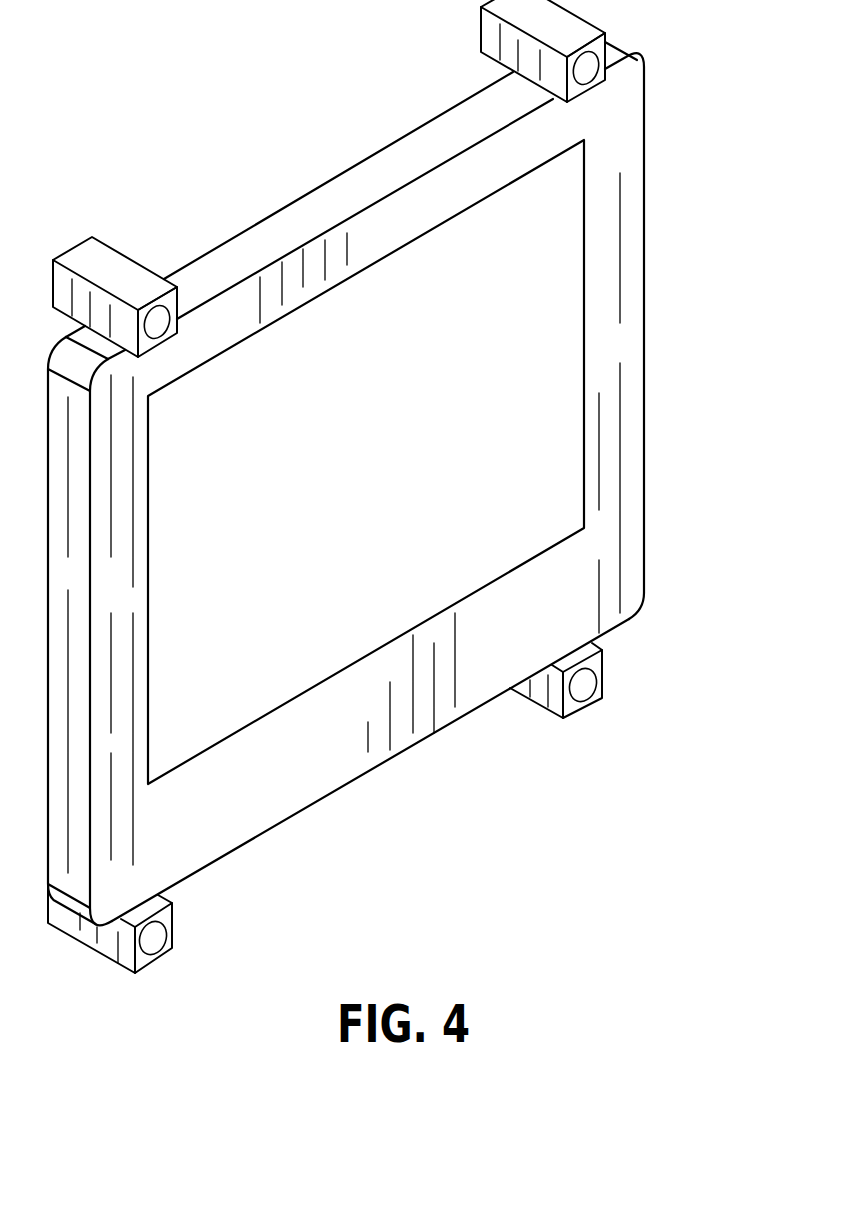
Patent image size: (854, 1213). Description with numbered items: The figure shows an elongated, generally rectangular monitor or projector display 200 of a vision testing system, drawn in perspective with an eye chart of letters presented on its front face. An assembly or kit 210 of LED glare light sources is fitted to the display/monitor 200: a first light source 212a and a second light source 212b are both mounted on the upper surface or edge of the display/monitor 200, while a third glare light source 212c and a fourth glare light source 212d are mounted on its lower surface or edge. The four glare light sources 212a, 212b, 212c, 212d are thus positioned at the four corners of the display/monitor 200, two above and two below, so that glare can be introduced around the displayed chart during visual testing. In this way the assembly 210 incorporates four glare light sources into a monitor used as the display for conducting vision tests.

The assembly or kit 210 is at (233, 87).
The display/monitor 200 is at (298, 673).
The first light source 212a is at (160, 317).
The second light source 212b is at (588, 69).
The third glare light source 212c is at (153, 938).
The fourth glare light source 212d is at (583, 685).